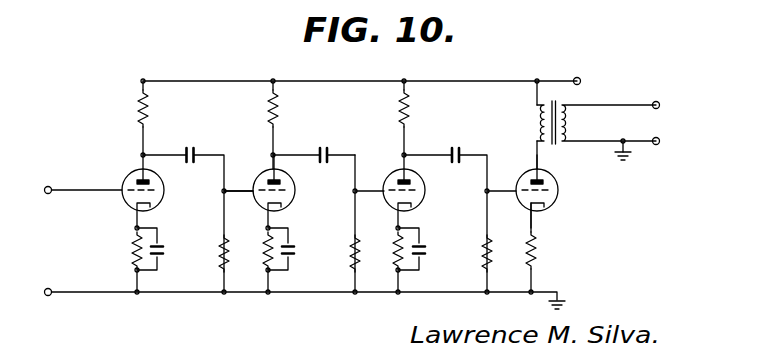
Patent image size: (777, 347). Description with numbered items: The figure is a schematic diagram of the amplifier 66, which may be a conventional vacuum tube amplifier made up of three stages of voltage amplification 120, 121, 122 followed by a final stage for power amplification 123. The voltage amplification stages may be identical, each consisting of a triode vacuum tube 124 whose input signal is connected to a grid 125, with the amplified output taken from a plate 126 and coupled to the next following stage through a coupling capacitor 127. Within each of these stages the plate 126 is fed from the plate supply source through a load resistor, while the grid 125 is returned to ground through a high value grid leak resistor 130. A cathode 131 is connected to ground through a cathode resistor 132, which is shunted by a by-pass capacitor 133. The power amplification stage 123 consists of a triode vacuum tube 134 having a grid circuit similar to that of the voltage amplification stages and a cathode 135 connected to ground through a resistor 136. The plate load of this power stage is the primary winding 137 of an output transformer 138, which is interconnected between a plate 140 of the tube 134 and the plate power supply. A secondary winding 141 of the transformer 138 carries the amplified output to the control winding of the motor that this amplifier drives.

The amplifier 66 is at (268, 315).
The voltage amplification stage 120 is at (151, 76).
The voltage amplification stage 121 is at (281, 76).
The voltage amplification stage 122 is at (412, 76).
The power amplification stage 123 is at (544, 76).
The triode vacuum tube 124 is at (296, 197).
The grid 125 is at (241, 190).
The plate 126 is at (276, 156).
The coupling capacitor 127 is at (332, 150).
The grid leak resistor 130 is at (219, 249).
The cathode 131 is at (266, 229).
The cathode resistor 132 is at (265, 256).
The by-pass capacitor 133 is at (291, 255).
The triode vacuum tube 134 is at (559, 196).
The cathode 135 is at (533, 228).
The resistor 136 is at (538, 259).
The primary winding 137 is at (537, 117).
The output transformer 138 is at (551, 144).
The plate 140 is at (537, 158).
The secondary winding 141 is at (566, 122).